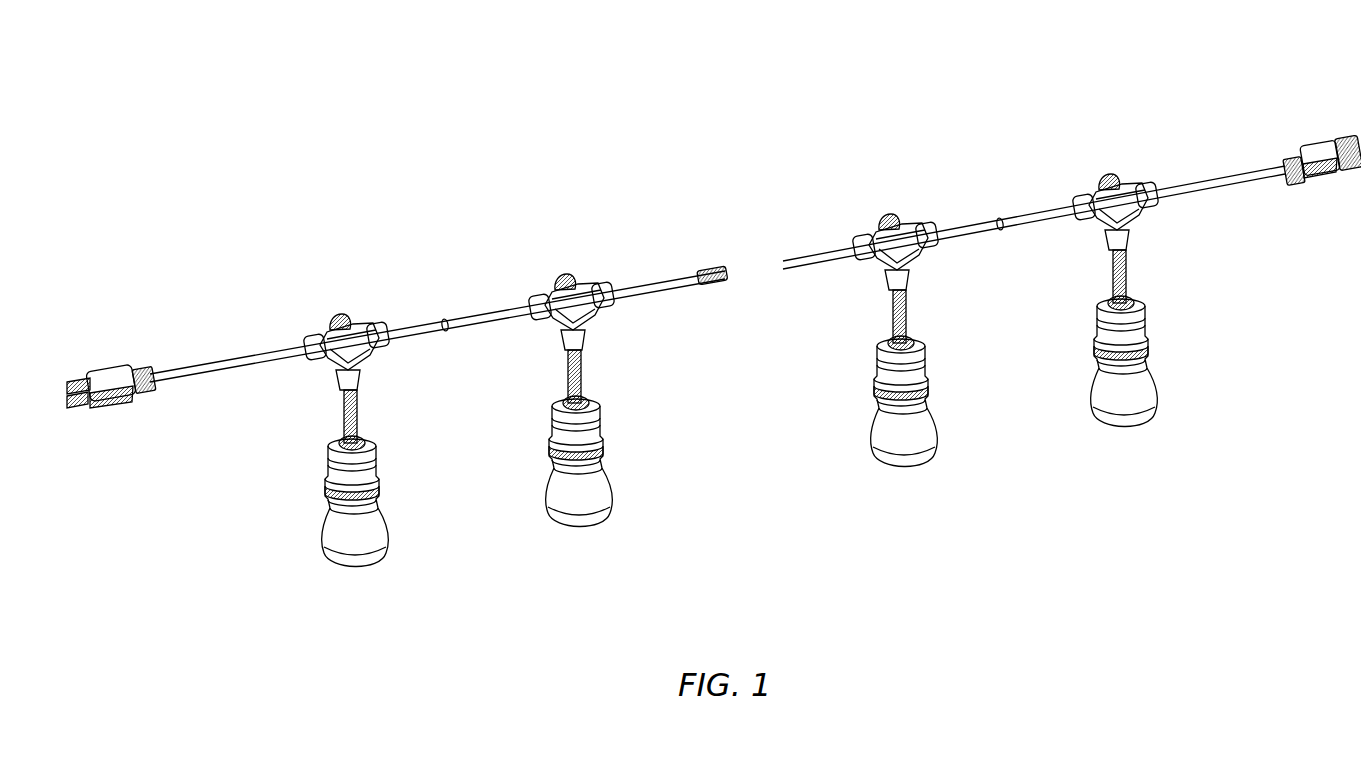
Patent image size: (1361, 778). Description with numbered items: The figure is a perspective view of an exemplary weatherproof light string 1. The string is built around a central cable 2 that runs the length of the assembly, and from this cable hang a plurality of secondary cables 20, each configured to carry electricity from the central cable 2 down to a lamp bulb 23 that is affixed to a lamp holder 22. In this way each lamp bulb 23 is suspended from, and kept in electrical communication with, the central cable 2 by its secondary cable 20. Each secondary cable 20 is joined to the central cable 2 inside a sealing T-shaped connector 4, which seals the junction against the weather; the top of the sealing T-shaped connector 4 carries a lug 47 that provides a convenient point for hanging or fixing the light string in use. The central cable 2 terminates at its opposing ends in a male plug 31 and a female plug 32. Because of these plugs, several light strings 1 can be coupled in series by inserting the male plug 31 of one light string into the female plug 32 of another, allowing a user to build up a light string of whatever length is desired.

The weatherproof light string 1 is at (302, 142).
The central cable 2 is at (272, 350).
The sealing T-shaped connector 4 is at (573, 263).
The lug 47 is at (544, 233).
The secondary cable 20 is at (580, 353).
The lamp holder 22 is at (600, 450).
The lamp bulb 23 is at (610, 505).
The male plug 31 is at (123, 390).
The female plug 32 is at (1317, 147).